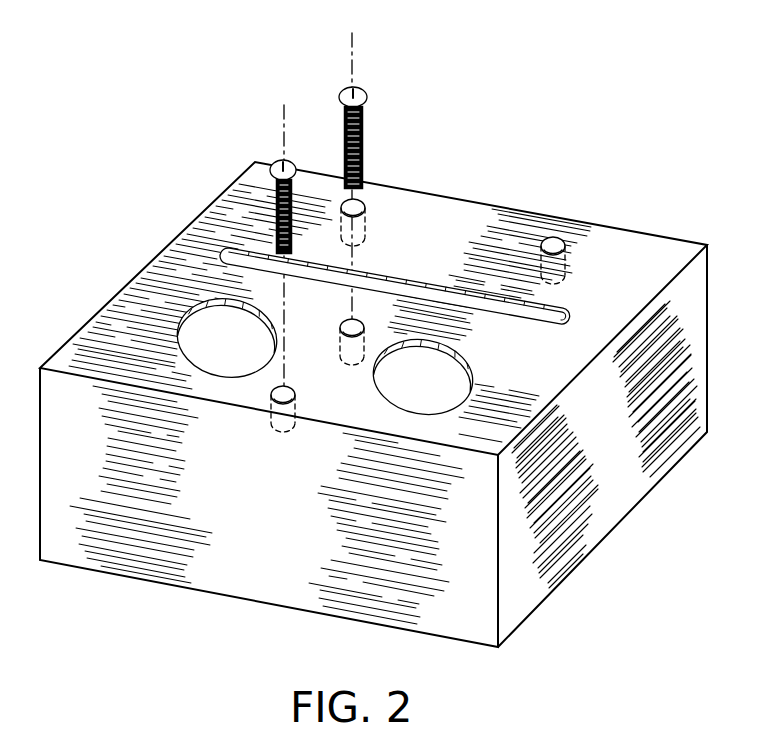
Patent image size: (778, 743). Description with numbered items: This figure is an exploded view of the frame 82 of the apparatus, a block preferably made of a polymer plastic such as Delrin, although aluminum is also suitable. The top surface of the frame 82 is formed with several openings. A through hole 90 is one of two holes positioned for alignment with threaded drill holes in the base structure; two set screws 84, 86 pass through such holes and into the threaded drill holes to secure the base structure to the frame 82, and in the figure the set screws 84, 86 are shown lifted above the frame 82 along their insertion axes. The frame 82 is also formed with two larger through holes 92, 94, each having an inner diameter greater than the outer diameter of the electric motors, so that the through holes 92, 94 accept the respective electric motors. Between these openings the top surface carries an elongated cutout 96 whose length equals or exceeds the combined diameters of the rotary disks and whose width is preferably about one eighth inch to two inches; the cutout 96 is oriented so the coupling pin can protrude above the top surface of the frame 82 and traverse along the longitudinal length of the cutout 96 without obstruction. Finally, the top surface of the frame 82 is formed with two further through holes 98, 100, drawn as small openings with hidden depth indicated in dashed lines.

The frame 82 is at (613, 507).
The set screw 84 is at (363, 106).
The set screw 86 is at (270, 176).
The through hole 90 is at (278, 405).
The through hole 92 is at (206, 348).
The through hole 94 is at (440, 380).
The elongated cutout 96 is at (550, 313).
The through hole 98 is at (556, 238).
The through hole 100 is at (365, 210).